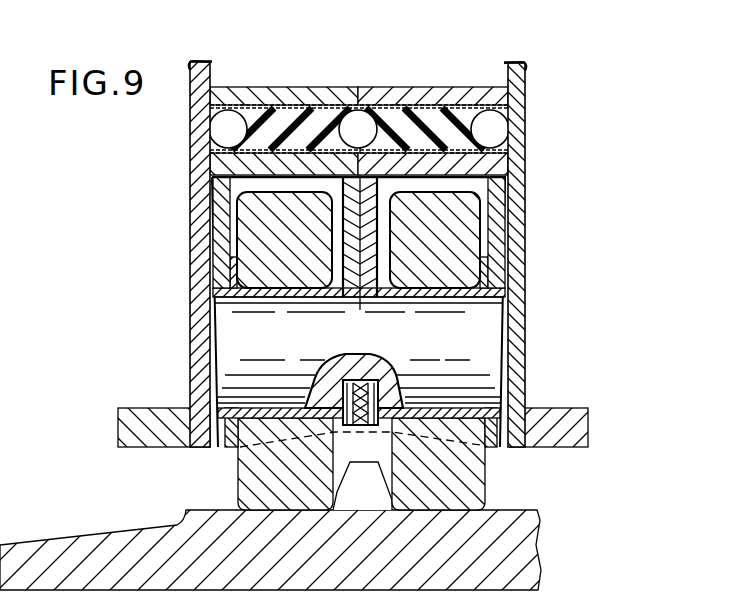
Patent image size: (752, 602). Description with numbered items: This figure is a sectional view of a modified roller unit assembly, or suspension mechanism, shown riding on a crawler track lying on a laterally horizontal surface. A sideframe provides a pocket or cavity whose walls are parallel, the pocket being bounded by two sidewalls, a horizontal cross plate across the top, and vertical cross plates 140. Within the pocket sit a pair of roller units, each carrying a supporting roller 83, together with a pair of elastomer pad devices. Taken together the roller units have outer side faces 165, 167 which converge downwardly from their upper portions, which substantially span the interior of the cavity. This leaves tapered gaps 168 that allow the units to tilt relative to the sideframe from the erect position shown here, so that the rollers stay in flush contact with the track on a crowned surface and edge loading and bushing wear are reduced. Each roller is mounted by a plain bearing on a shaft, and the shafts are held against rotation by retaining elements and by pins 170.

The supporting roller 83 is at (240, 470).
The vertical cross plate 140 is at (503, 440).
The outer side face 165 is at (215, 303).
The outer side face 167 is at (500, 285).
The tapered gap 168 is at (212, 357).
The pin 170 is at (374, 384).